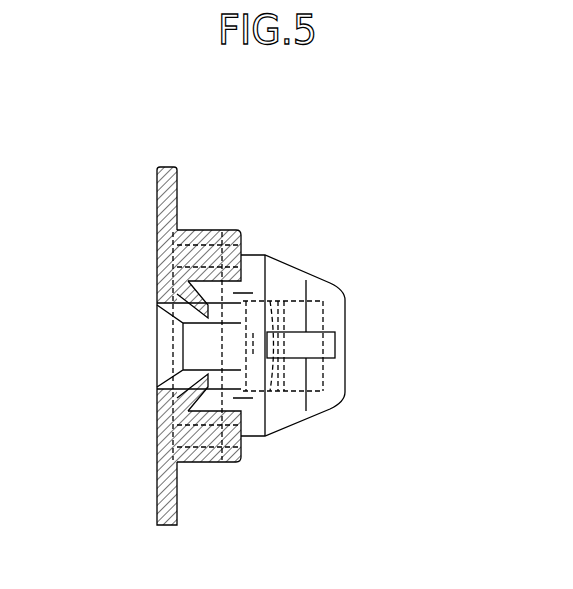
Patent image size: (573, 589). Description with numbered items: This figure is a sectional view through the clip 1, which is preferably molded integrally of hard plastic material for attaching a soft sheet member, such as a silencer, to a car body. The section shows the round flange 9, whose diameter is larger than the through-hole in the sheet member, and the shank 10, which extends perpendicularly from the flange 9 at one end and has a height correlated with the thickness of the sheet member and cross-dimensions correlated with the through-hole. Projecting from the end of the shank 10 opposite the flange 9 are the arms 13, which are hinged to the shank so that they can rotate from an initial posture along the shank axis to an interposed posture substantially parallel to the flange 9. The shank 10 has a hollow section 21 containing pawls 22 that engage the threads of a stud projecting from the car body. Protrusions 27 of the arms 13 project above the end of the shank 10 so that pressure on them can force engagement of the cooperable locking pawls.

The clip 1 is at (396, 219).
The round flange 9 is at (172, 167).
The shank 10 is at (218, 230).
The arms 13 is at (338, 300).
The hollow section 21 is at (185, 358).
The pawls 22 is at (165, 303).
The protrusions 27 is at (312, 354).